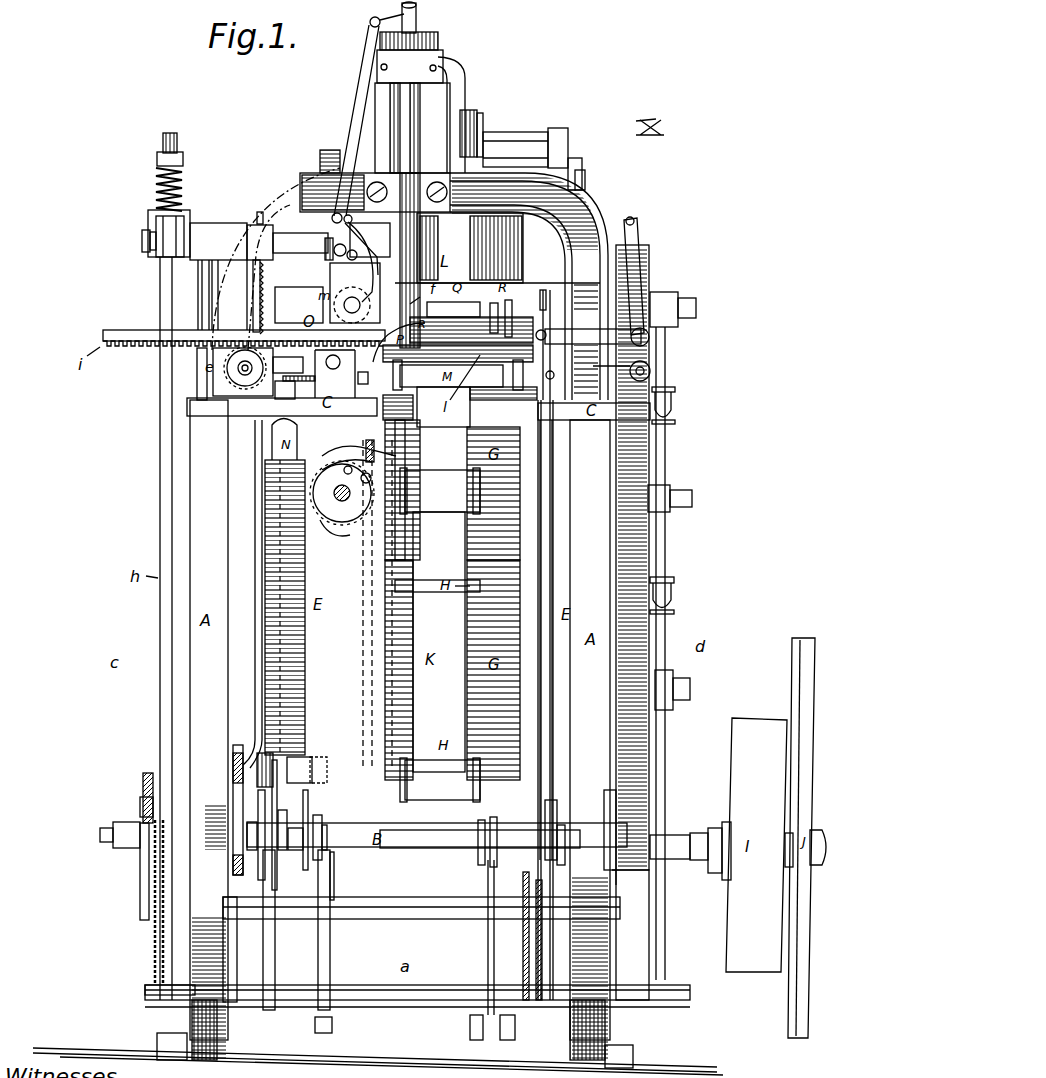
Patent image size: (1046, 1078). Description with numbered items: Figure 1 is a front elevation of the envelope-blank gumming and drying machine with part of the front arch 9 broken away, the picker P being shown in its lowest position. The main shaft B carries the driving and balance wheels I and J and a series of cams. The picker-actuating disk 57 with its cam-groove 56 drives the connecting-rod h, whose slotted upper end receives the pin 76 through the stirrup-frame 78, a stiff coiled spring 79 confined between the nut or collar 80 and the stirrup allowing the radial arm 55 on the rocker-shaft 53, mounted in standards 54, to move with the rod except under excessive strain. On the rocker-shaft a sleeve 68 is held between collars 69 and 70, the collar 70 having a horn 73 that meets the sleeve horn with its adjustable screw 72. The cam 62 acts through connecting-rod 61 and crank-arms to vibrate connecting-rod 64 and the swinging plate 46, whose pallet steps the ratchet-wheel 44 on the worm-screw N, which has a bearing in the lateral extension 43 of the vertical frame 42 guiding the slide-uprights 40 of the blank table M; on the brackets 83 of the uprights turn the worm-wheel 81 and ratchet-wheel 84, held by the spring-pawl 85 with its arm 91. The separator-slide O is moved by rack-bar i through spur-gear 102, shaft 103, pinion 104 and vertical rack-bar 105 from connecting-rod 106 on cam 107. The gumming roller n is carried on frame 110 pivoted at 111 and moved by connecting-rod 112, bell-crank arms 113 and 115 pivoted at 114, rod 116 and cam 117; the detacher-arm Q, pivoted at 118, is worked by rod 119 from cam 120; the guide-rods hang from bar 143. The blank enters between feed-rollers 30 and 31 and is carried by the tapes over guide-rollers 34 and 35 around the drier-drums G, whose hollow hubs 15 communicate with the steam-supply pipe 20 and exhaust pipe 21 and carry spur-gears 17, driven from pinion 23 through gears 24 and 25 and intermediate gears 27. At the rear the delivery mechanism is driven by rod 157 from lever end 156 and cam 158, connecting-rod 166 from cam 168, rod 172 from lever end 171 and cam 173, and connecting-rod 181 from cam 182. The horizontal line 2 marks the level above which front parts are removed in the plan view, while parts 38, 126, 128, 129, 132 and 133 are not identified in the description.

The horizontal line 2 is at (150, 320).
The curved arm 9 is at (529, 286).
The hollow axial hubs 15 is at (445, 482).
The spur-gear 17 is at (655, 290).
The vertical steam-supply pipe 20 is at (261, 949).
The exhaust pipe 21 is at (648, 956).
The pinion 23 is at (624, 886).
The gear 24 is at (655, 757).
The gear 25 is at (613, 830).
The intermediate gears 27 is at (672, 396).
The feed-roller 30 is at (537, 293).
The feed-roller 31 is at (541, 342).
The guide-rollers 34 is at (482, 137).
The guide-rollers 35 is at (476, 790).
The block 38 is at (548, 153).
The slide-uprights 40 is at (396, 490).
The vertical frame 42 is at (372, 636).
The lateral extension 43 is at (307, 770).
The ratchet-wheel 44 is at (305, 379).
The swinging plate 46 is at (299, 390).
The rocker-shaft 53 is at (309, 246).
The standards 54 is at (303, 278).
The radial arm 55 is at (160, 260).
The cam-groove 56 is at (142, 790).
The picker-actuating disk 57 is at (140, 866).
The connecting-rod 61 is at (277, 810).
The cam 62 is at (282, 850).
The connecting-rod 64 is at (418, 409).
The sleeve 68 is at (260, 242).
The collar 69 is at (266, 237).
The fixed collar 70 is at (218, 241).
The screw 72 is at (515, 283).
The horn 73 is at (240, 258).
The pin 76 is at (140, 241).
The stirrup-frame 78 is at (190, 224).
The coiled spring 79 is at (186, 185).
The nut or collar 80 is at (181, 150).
The worm-wheel 81 is at (347, 528).
The brackets 83 is at (361, 486).
The ratchet-wheel 84 is at (342, 493).
The spring-pawl 85 is at (364, 442).
The arm 91 is at (352, 455).
The spur-gear 102 is at (233, 350).
The horizontal shaft 103 is at (225, 367).
The pinion 104 is at (240, 372).
The vertical rack-bar 105 is at (299, 305).
The connecting-rod 106 is at (262, 481).
The cam 107 is at (238, 794).
The frame 110 is at (366, 95).
The pivotal point 111 is at (371, 27).
The connecting-rod 112 is at (470, 225).
The arm 113 is at (644, 240).
The pivot 114 is at (652, 371).
The arm 115 is at (611, 372).
The rod 116 is at (553, 560).
The cam 117 is at (548, 840).
The pivoted end 118 is at (650, 337).
The rod 119 is at (541, 534).
The cam 120 is at (512, 824).
The block 126 is at (295, 360).
The bracket 128 is at (329, 374).
The stop 129 is at (366, 371).
The disc 132 is at (255, 835).
The hub 133 is at (258, 862).
The horizontal bar 143 is at (404, 322).
The lever end 156 is at (492, 946).
The rod 157 is at (495, 963).
The cam 158 is at (470, 842).
The connecting-rod 166 is at (310, 809).
The cam 168 is at (306, 862).
The lever end 171 is at (333, 876).
The rod 172 is at (333, 893).
The cam 173 is at (323, 838).
The connecting-rod 181 is at (485, 937).
The cam 182 is at (484, 836).